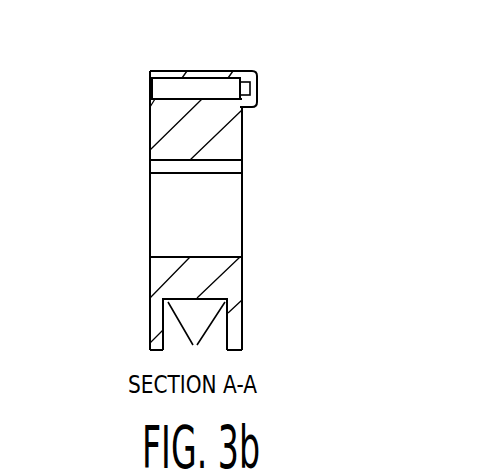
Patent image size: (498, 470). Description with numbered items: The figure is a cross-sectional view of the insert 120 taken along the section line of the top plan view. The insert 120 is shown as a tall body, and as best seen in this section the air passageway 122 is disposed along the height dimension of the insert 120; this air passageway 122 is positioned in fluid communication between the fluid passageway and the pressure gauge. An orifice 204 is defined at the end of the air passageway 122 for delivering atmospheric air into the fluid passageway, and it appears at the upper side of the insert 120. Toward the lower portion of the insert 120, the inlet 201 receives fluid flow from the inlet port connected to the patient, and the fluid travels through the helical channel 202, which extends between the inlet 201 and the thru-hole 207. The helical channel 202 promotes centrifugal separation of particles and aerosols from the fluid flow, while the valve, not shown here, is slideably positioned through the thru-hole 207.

The insert 120 is at (68, 197).
The air passageway 122 is at (165, 90).
The orifice 204 is at (246, 88).
The thru-hole 207 is at (205, 257).
The helical channel 202 is at (188, 318).
The inlet 201 is at (165, 349).